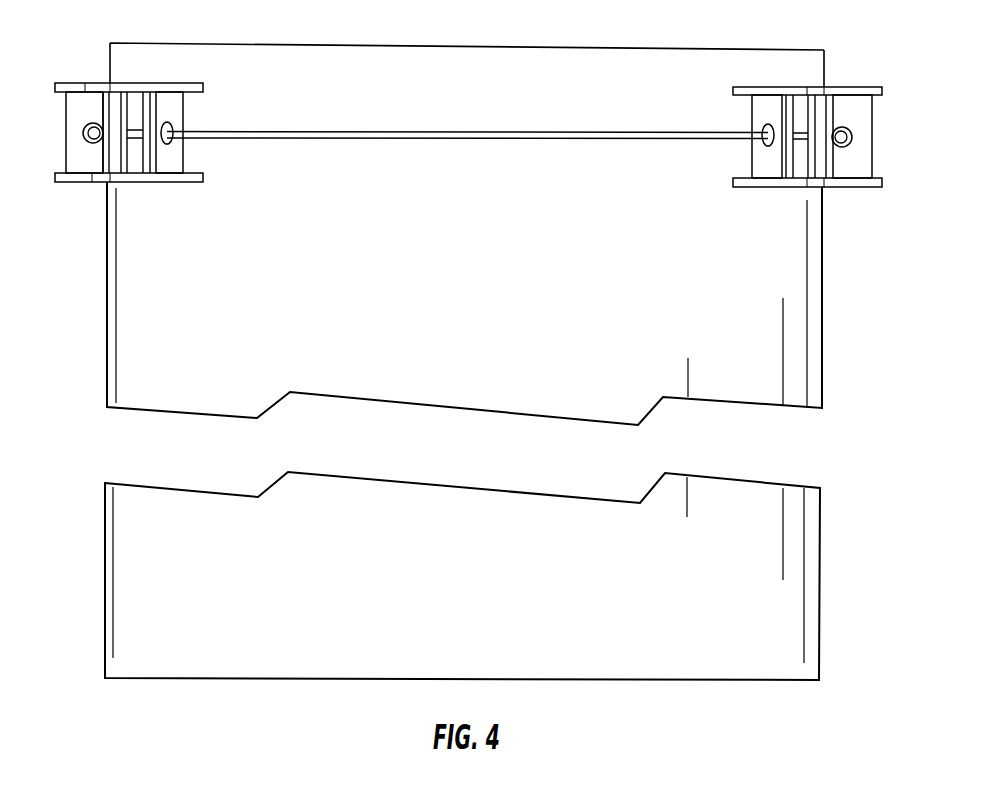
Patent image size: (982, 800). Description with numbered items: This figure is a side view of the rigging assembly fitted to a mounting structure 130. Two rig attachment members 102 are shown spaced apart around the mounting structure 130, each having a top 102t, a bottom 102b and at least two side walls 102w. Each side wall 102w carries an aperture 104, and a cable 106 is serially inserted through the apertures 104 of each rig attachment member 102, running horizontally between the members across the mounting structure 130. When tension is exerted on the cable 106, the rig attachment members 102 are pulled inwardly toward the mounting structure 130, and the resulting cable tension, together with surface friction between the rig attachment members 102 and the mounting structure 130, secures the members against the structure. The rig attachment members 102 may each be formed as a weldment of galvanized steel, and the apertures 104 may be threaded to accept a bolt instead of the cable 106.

The rig attachment member 102 is at (846, 191).
The top 102t is at (83, 88).
The bottom 102b is at (92, 183).
The side wall 102w is at (81, 105).
The aperture 104 is at (767, 147).
The cable 106 is at (462, 130).
The mounting structure 130 is at (483, 327).